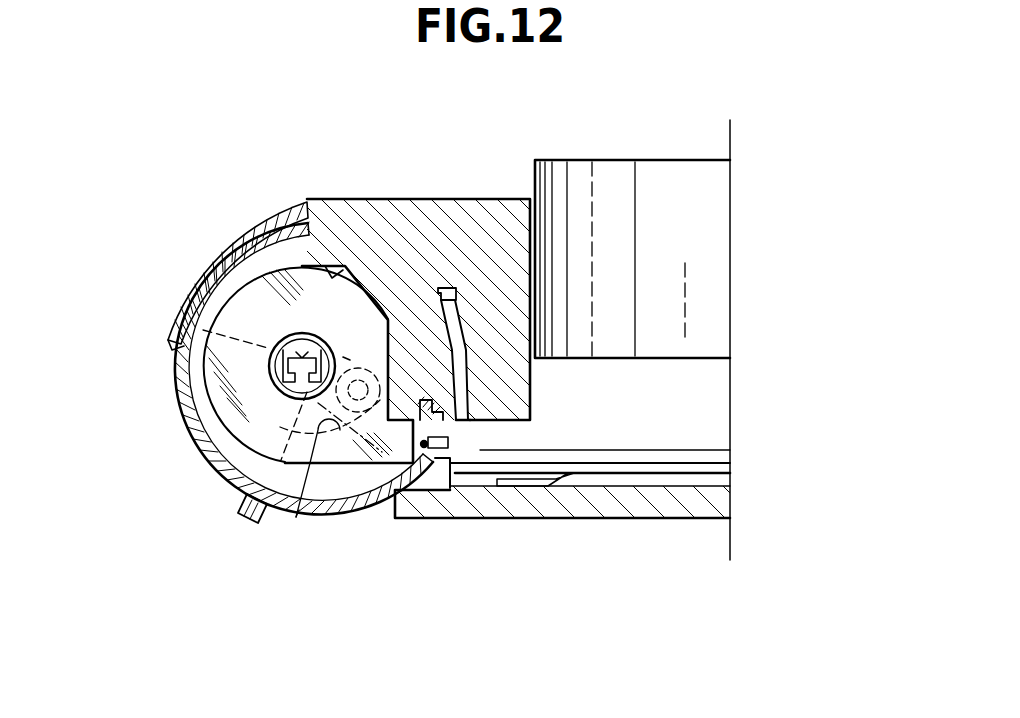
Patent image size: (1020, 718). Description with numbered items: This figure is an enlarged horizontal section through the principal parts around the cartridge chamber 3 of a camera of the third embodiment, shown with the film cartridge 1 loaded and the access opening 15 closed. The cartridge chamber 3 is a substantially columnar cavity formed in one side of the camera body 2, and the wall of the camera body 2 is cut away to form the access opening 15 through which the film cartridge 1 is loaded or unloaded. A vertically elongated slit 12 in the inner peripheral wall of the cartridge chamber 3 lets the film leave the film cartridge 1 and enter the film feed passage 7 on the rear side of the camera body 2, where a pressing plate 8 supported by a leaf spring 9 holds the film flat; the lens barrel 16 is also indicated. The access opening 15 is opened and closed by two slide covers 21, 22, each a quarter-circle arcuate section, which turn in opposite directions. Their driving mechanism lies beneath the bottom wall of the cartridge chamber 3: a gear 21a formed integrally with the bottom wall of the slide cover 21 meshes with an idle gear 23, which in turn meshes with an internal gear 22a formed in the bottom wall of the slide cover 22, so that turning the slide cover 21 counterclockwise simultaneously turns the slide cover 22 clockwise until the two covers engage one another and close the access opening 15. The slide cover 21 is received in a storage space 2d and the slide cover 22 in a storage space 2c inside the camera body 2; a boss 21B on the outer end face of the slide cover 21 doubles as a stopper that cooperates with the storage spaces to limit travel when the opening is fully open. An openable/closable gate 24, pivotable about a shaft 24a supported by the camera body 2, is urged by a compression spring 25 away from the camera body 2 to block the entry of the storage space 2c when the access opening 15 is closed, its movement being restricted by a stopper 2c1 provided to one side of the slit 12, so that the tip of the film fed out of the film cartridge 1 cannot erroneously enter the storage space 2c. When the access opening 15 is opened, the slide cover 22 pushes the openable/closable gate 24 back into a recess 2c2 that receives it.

The film cartridge 1 is at (297, 280).
The camera body 2 is at (443, 215).
The storage space 2c is at (457, 292).
The stopper 2c1 is at (470, 452).
The recess 2c2 is at (470, 403).
The storage space 2d is at (250, 230).
The cartridge chamber 3 is at (330, 266).
The film feed passage 7 is at (484, 492).
The pressing plate 8 is at (688, 456).
The leaf spring 9 is at (587, 489).
The slit 12 is at (465, 478).
The access opening 15 is at (210, 466).
The lens barrel 16 is at (706, 197).
The slide cover 21 is at (182, 428).
The gear 21a is at (343, 357).
The boss 21B is at (233, 498).
The slide cover 22 is at (363, 513).
The internal gear 22a is at (296, 518).
The idle gear 23 is at (363, 370).
The openable/closable gate 24 is at (445, 416).
The shaft 24a is at (447, 467).
The spring 25 is at (440, 437).